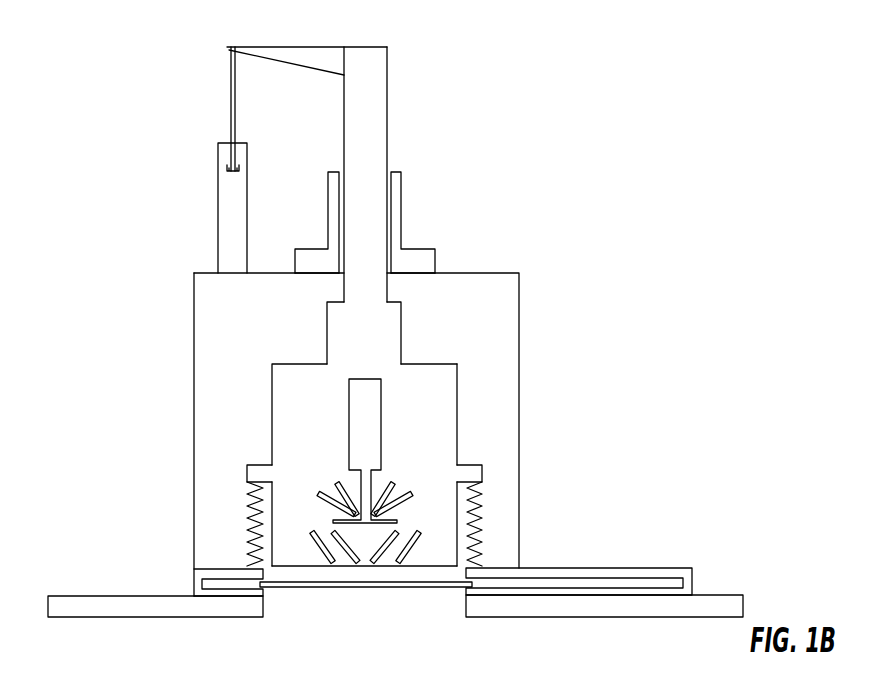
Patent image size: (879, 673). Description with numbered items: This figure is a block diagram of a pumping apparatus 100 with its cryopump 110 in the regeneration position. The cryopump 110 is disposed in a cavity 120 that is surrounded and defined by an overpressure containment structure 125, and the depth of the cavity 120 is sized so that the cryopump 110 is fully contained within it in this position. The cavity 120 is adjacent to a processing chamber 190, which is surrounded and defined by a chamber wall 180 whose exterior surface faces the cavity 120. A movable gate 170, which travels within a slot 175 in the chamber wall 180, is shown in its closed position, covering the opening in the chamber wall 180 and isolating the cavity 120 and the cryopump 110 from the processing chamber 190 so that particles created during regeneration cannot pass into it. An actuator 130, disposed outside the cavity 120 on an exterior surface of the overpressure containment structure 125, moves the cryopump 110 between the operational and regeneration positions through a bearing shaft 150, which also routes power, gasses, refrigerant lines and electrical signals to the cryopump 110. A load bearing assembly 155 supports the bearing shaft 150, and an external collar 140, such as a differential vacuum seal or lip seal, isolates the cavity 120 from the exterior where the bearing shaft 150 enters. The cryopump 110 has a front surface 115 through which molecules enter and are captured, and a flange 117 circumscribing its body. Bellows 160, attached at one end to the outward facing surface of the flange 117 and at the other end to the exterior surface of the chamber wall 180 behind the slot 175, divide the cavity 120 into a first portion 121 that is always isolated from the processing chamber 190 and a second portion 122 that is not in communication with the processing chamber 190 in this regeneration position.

The pumping apparatus 100 is at (160, 303).
The cryopump 110 is at (260, 433).
The front surface 115 is at (341, 568).
The flange 117 is at (247, 471).
The cavity 120 is at (482, 311).
The first portion 121 is at (495, 400).
The second portion 122 is at (468, 538).
The overpressure containment structure 125 is at (524, 330).
The actuator 130 is at (218, 206).
The external collar 140 is at (401, 213).
The bearing shaft 150 is at (333, 290).
The load bearing assembly 155 is at (308, 47).
The bellows 160 is at (241, 552).
The movable gate 170 is at (408, 590).
The slot 175 is at (549, 566).
The chamber wall 180 is at (229, 623).
The processing chamber 190 is at (392, 652).